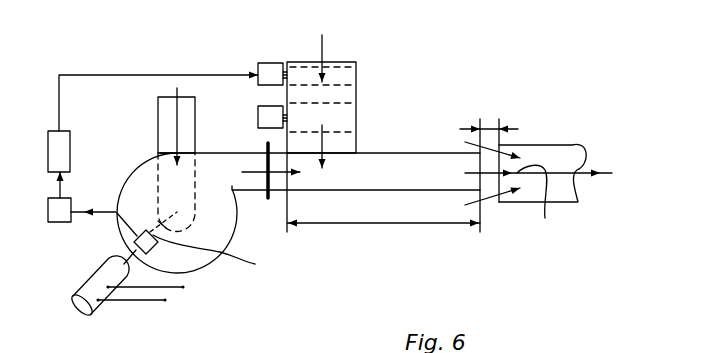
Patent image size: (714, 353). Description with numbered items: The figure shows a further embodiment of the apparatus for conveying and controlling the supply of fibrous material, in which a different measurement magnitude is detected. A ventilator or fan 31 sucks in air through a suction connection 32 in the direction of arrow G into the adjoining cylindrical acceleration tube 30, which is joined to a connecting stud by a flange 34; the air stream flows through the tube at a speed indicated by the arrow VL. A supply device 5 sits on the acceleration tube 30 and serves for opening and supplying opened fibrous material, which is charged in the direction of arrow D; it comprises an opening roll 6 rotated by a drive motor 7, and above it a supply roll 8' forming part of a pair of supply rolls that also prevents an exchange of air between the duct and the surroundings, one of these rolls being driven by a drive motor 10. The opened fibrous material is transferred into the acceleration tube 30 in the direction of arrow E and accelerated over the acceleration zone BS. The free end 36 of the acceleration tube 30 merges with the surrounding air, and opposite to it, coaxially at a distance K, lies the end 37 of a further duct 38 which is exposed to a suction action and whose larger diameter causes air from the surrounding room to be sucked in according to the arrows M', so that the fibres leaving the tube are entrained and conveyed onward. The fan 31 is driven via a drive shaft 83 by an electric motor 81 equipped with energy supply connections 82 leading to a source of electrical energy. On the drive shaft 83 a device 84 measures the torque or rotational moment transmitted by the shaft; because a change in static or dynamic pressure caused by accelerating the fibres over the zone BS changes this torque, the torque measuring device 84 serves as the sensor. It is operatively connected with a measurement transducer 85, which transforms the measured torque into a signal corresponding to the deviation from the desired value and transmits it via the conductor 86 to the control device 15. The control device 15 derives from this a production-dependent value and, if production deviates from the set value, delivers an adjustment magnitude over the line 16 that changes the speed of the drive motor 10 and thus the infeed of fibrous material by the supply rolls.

The line 16 is at (82, 75).
The control device 15 is at (58, 138).
The conductor 86 is at (70, 182).
The measurement transducer 85 is at (68, 206).
The suction connection 32 is at (158, 118).
The air intake direction arrow G is at (176, 112).
The drive motor 10 is at (266, 63).
The drive motor 7 is at (258, 114).
The supply device 5 is at (356, 92).
The supply roll 8' is at (372, 61).
The opening roll 6 is at (347, 120).
The fibrous material infeed arrow D is at (326, 45).
The fibrous material transfer arrow E is at (326, 147).
The flange 34 is at (266, 144).
The fan 31 is at (215, 267).
The acceleration tube 30 is at (389, 192).
The air stream speed arrow VL is at (297, 178).
The acceleration zone BS is at (432, 226).
The free end 36 is at (477, 160).
The distance K is at (487, 124).
The further duct 38 is at (553, 145).
The end of further duct 37 is at (537, 207).
The sucked-in air arrows M' is at (511, 179).
The torque measuring device 84 is at (132, 246).
The drive shaft 83 is at (217, 244).
The electric motor 81 is at (72, 312).
The energy supply connections 82 is at (165, 302).